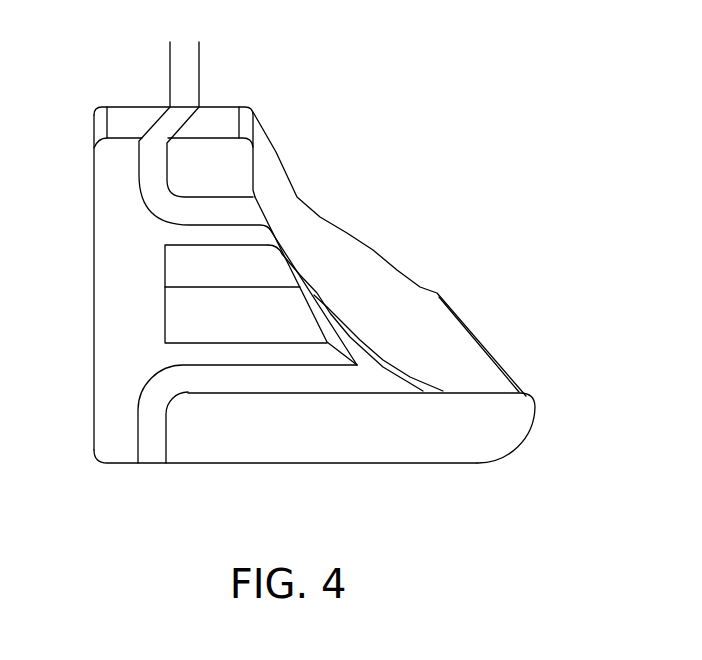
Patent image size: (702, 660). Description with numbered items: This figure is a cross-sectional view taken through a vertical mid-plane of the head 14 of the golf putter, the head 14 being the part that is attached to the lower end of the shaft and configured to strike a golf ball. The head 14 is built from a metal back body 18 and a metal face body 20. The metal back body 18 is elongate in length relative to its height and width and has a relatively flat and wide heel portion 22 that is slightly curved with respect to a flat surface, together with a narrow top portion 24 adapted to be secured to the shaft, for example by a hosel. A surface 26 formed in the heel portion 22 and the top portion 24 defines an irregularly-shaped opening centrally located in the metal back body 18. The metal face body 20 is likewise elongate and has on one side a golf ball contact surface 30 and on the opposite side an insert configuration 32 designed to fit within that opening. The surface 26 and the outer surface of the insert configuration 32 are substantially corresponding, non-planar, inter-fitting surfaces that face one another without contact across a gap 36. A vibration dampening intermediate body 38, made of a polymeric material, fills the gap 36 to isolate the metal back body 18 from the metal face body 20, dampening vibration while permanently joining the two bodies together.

The head 14 is at (484, 116).
The metal back body 18 is at (423, 287).
The metal face body 20 is at (94, 445).
The heel portion 22 is at (412, 435).
The top portion 24 is at (222, 122).
The surface 26 is at (263, 391).
The golf ball contact surface 30 is at (94, 253).
The insert configuration 32 is at (252, 265).
The gap 36 is at (243, 53).
The vibration dampening intermediate body 38 is at (200, 378).